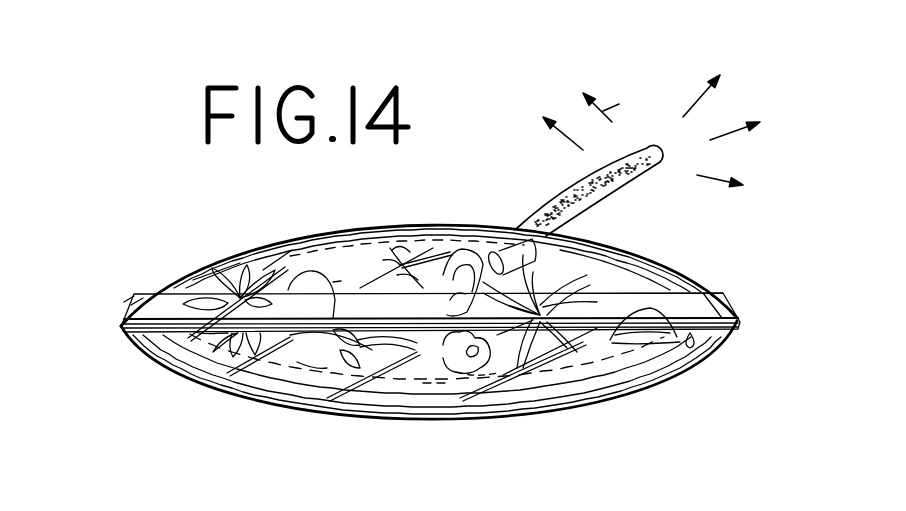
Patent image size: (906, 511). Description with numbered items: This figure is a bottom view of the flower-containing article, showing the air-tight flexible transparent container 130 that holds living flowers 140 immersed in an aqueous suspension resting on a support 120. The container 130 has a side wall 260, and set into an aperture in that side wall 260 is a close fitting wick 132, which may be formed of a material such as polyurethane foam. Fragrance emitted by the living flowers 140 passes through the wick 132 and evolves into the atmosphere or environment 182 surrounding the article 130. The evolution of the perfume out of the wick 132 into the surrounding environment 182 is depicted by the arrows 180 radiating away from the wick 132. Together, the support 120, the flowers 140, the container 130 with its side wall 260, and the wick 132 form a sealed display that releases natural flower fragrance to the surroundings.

The support 120 is at (598, 328).
The air-tight flexible transparent container 130 is at (136, 375).
The wick 132 is at (625, 177).
The living flowers 140 is at (182, 280).
The arrows 180 is at (693, 110).
The atmosphere or environment 182 is at (793, 48).
The side wall 260 is at (467, 234).